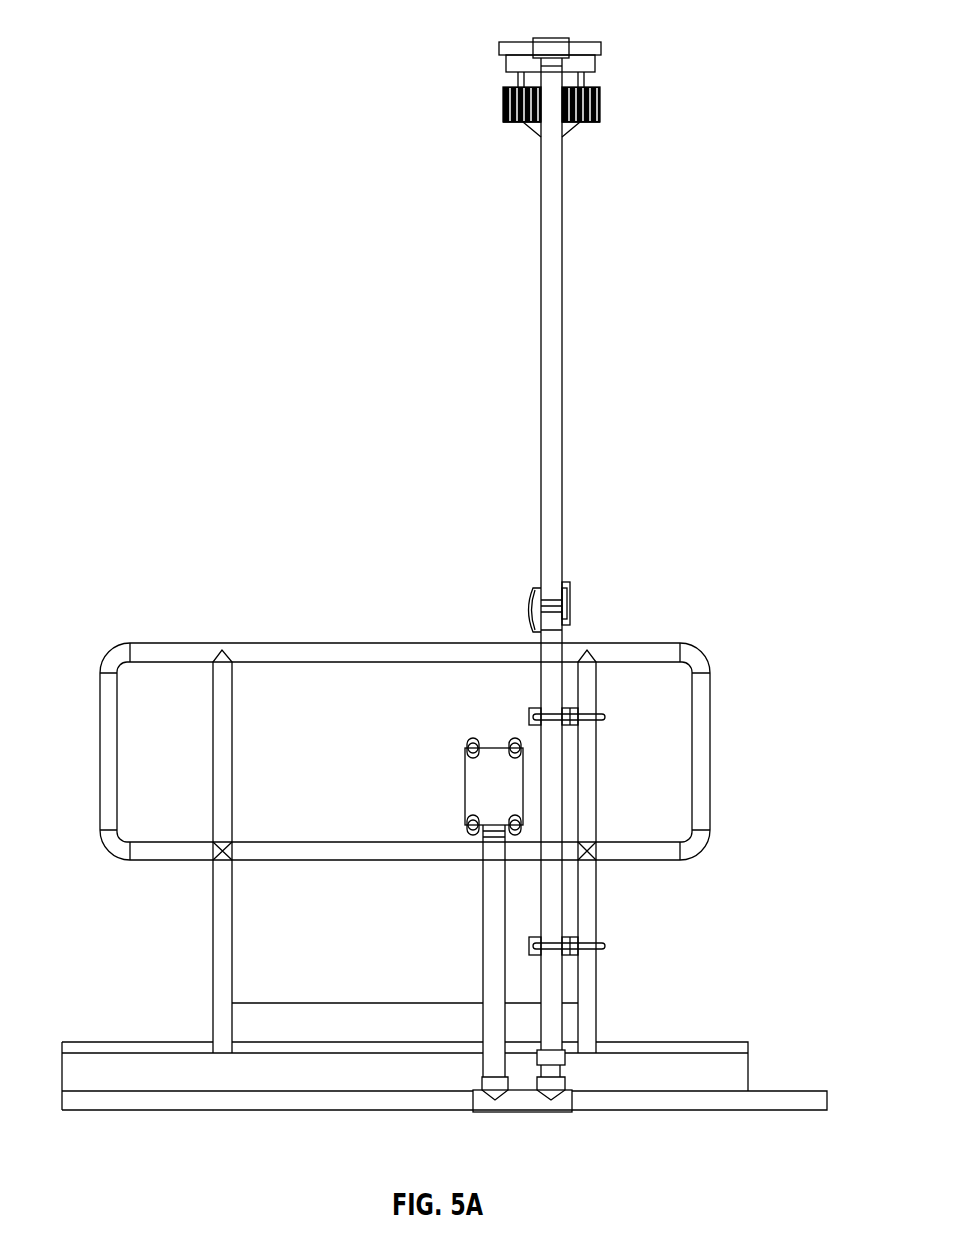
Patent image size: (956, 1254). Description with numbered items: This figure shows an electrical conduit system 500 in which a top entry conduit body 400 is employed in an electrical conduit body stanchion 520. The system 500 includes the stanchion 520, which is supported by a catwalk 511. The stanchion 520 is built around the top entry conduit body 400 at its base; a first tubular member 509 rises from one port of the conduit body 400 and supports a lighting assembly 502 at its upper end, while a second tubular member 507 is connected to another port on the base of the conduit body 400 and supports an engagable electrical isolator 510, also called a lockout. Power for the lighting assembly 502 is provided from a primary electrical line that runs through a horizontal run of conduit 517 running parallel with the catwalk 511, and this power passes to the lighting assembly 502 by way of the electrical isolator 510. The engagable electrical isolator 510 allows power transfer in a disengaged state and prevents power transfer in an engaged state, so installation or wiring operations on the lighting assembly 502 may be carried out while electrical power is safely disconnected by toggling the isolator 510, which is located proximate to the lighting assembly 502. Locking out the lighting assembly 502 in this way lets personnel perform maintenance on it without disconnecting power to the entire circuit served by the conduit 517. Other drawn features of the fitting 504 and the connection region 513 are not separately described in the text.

The electrical conduit system 500 is at (724, 236).
The lighting assembly 502 is at (630, 370).
The top connector with heat sink 504 is at (504, 122).
The second tubular member 507 is at (483, 866).
The first tubular member 509 is at (541, 680).
The engagable electrical isolator 510 is at (465, 777).
The catwalk 511 is at (717, 1042).
The pipe bottom fitting 513 is at (578, 1070).
The horizontal run of conduit 517 is at (282, 1144).
The stanchion 520 is at (465, 907).
The top entry conduit body 400 is at (516, 1112).